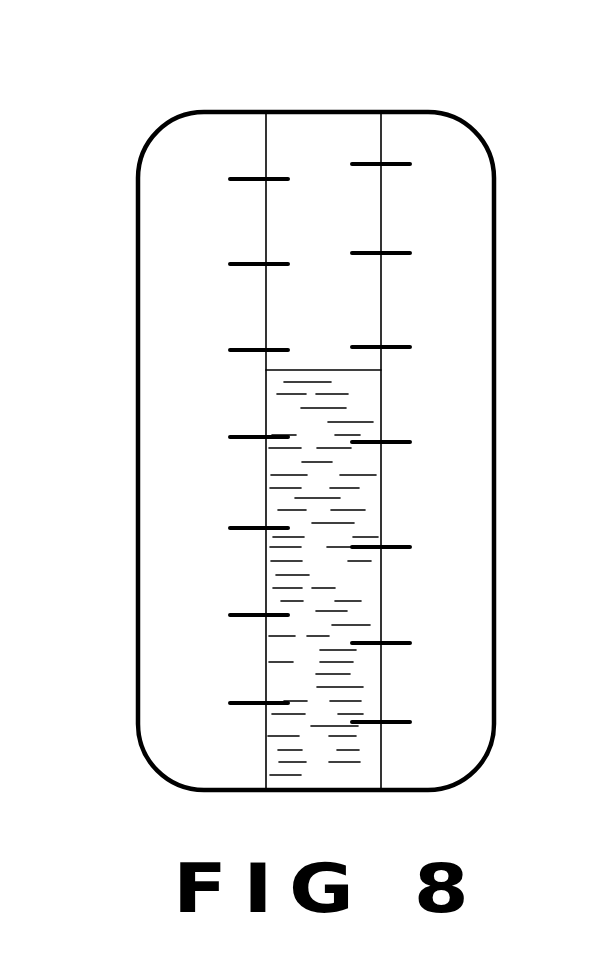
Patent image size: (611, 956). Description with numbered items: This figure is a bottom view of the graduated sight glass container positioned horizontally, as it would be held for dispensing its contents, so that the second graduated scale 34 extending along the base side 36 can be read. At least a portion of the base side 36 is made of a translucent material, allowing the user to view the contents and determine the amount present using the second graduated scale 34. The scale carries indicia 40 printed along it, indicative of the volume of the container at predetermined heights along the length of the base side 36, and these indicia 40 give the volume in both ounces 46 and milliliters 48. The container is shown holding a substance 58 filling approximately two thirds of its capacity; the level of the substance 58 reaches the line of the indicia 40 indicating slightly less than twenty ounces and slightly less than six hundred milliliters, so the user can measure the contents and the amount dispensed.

The base side 36 is at (236, 152).
The second graduated scale 34 is at (266, 310).
The indicia 40 is at (184, 432).
The milliliters 48 is at (183, 527).
The ounces 46 is at (450, 440).
The substance 58 is at (338, 368).